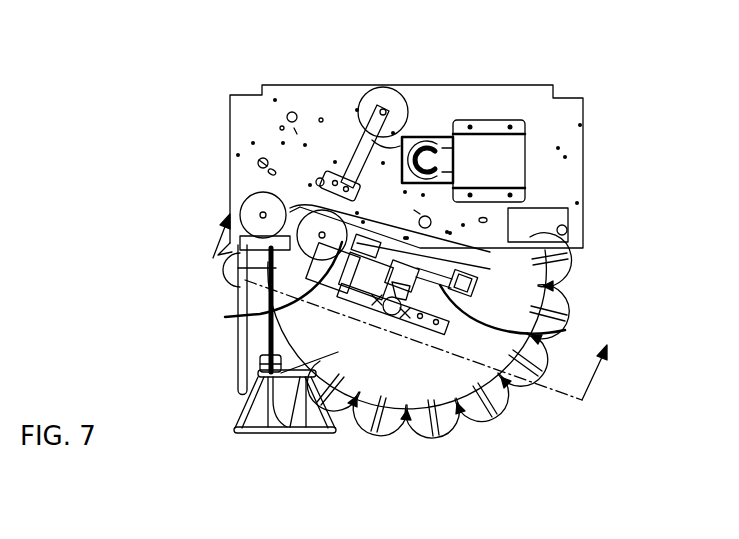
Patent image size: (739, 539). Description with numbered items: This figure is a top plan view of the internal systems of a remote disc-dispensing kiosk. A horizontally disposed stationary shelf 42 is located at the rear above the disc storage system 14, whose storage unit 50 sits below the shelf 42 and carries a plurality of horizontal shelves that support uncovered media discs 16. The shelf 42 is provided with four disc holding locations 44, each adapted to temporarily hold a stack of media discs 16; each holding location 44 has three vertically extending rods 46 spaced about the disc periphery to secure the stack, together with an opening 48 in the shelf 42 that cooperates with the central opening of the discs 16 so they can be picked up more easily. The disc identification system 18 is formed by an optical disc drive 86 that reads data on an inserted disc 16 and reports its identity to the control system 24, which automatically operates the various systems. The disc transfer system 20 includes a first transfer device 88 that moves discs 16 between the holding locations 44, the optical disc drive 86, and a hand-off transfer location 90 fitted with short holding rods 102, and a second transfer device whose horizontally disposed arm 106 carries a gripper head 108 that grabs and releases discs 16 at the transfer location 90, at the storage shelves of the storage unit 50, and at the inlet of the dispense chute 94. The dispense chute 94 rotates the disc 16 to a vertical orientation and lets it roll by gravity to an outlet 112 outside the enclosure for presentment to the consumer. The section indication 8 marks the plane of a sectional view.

The section line 8- 8 is at (415, 294).
The disc storage system 14 is at (500, 420).
The prerecorded media disc 16 is at (412, 100).
The disc identification system 18 is at (540, 165).
The disc transfer system 20 is at (343, 130).
The control system 24 is at (582, 228).
The shelf 42 is at (587, 110).
The disc holding location 44 is at (262, 157).
The vertically extending rod 46 is at (320, 117).
The opening 48 is at (283, 125).
The storage unit 50 is at (385, 438).
The optical disc drive 86 is at (527, 148).
The first transfer device 88 is at (400, 140).
The transfer location 90 is at (213, 258).
The dispense chute 94 is at (254, 448).
The holding rod 102 is at (215, 236).
The arm 106 is at (565, 330).
The gripper head 108 is at (225, 317).
The outlet 112 is at (293, 437).